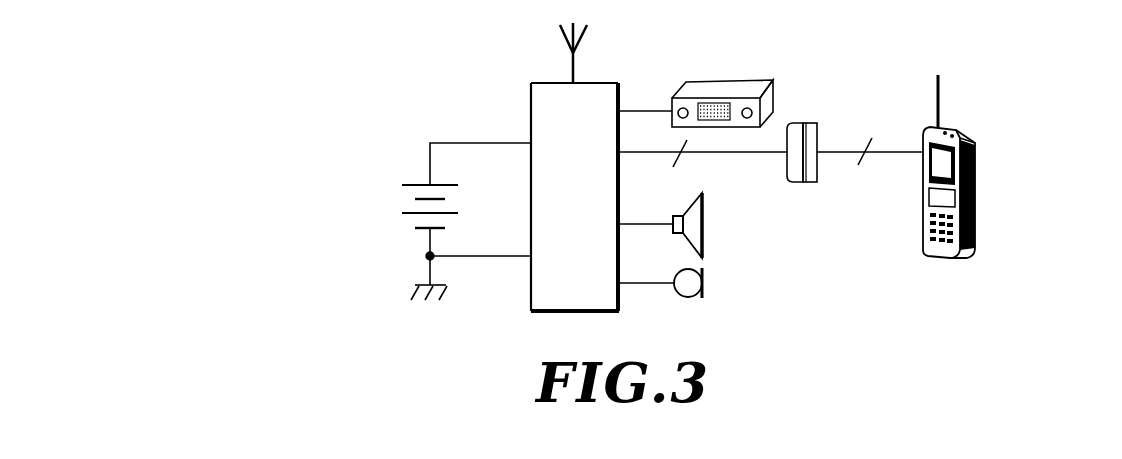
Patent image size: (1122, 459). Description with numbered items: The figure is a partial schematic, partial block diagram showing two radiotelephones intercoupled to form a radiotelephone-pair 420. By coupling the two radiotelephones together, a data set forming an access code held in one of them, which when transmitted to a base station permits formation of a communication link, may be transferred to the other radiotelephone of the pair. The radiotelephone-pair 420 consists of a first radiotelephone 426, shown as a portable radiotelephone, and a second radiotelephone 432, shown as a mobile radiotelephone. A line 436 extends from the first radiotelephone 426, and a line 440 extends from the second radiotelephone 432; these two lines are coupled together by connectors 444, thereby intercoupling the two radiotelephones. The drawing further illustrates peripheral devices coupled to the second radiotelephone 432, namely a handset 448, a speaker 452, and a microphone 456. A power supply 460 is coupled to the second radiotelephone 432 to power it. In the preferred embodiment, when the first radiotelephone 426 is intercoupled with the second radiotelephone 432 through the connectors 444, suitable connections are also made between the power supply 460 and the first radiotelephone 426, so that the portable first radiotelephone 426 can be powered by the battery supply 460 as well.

The radiotelephone-pair 420 is at (374, 87).
The first radiotelephone 426 is at (978, 185).
The second radiotelephone 432 is at (532, 83).
The line 436 is at (873, 153).
The line 440 is at (705, 154).
The connectors 444 is at (813, 122).
The handset 448 is at (720, 82).
The speaker 452 is at (704, 216).
The microphone 456 is at (703, 287).
The power supply 460 is at (410, 183).